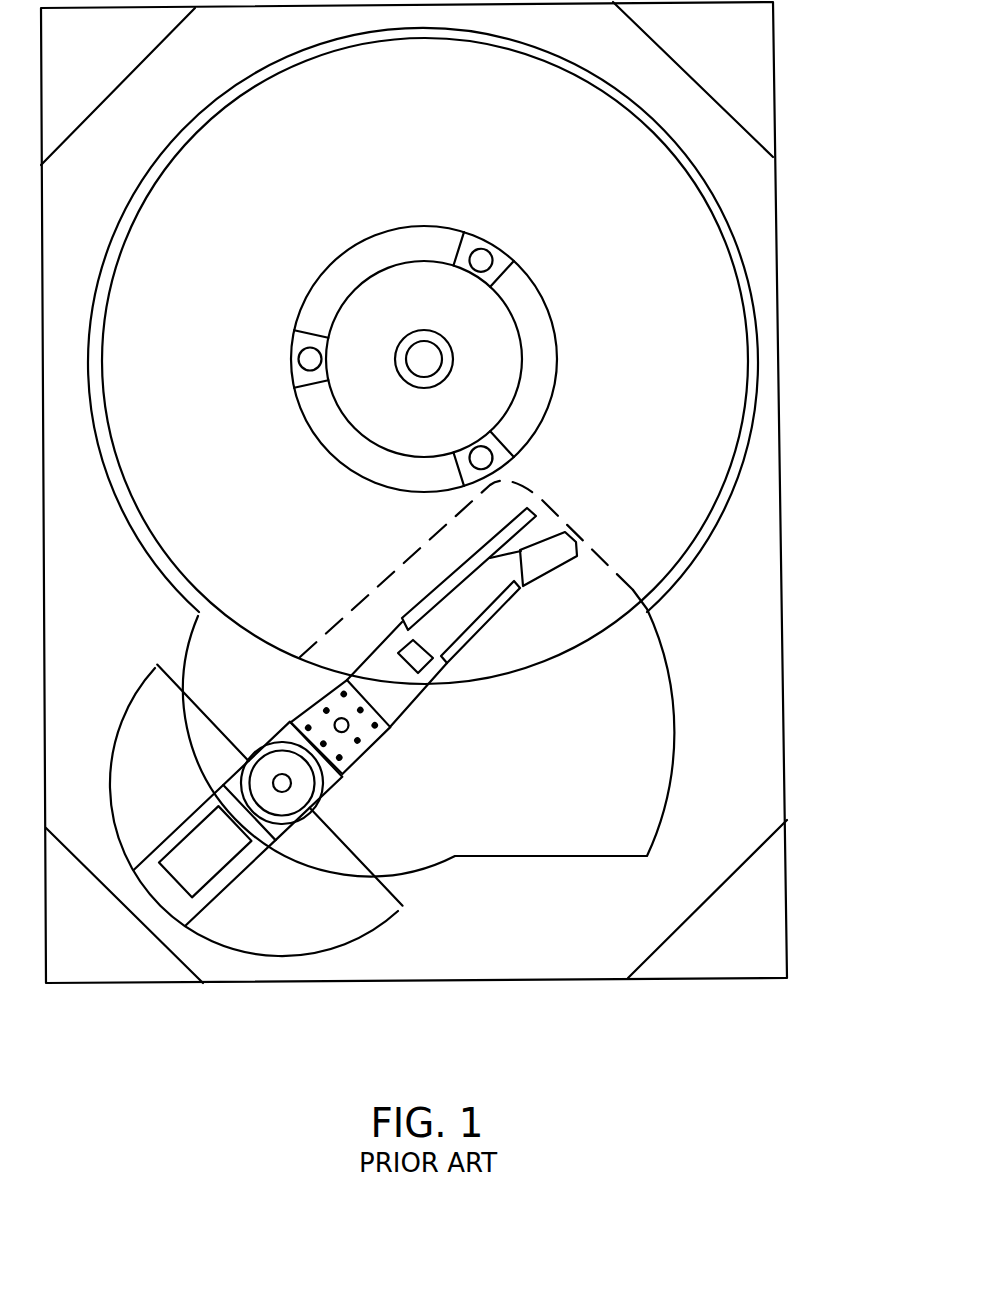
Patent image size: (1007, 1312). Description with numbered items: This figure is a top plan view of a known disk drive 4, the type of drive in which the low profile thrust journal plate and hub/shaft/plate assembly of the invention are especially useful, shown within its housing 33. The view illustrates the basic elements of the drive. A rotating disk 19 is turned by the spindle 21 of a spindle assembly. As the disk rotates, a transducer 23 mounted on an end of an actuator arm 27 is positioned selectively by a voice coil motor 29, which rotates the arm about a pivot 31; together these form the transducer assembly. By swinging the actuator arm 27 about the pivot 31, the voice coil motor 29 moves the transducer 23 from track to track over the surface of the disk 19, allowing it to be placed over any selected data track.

The disk drive base 4 is at (213, 958).
The rotating disk 19 is at (214, 382).
The spindle 21 is at (420, 348).
The transducer 23 is at (548, 508).
The actuator arm 27 is at (383, 668).
The voice coil motor 29 is at (338, 908).
The pivot 31 is at (303, 793).
The housing 33 is at (773, 130).